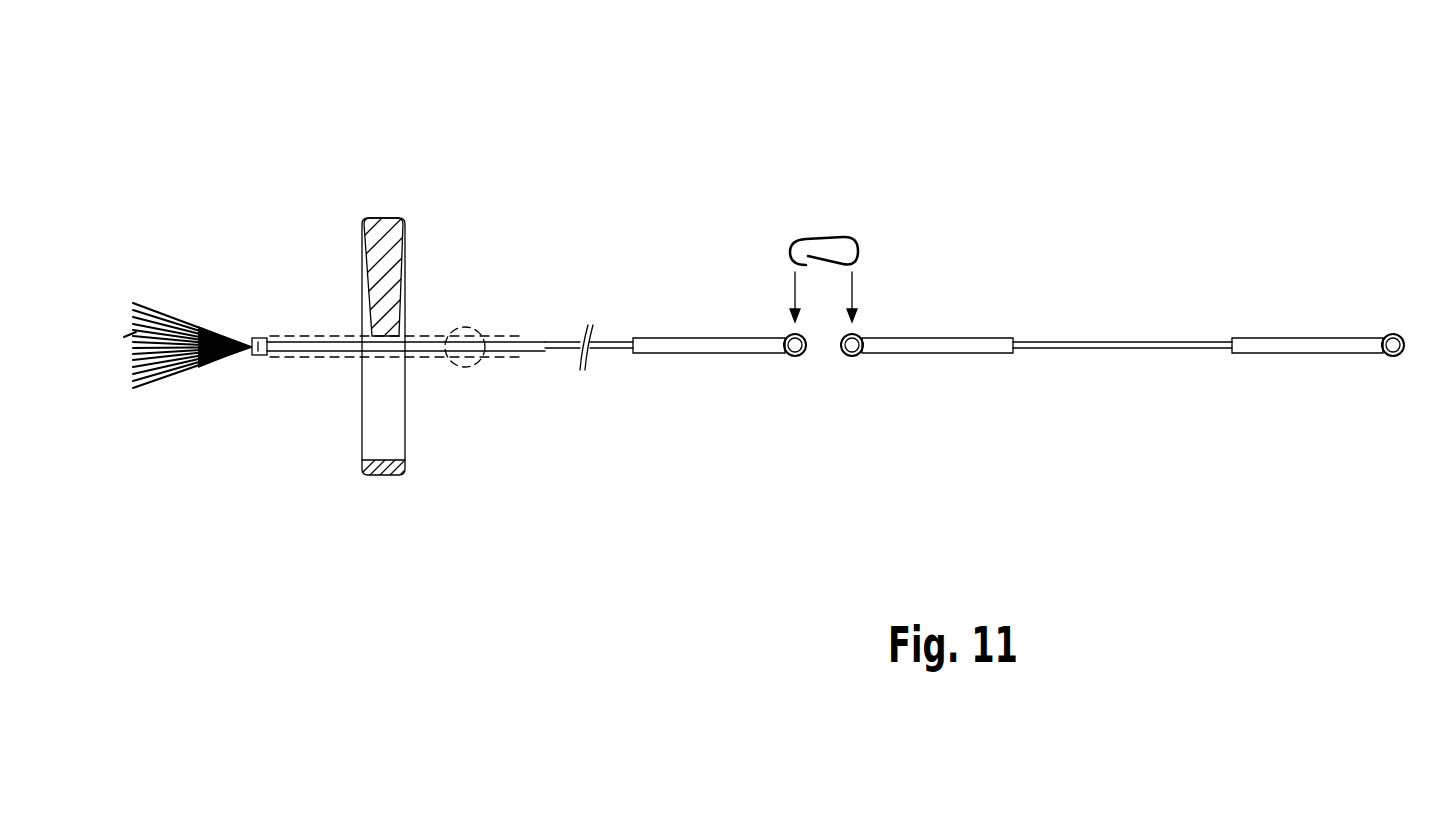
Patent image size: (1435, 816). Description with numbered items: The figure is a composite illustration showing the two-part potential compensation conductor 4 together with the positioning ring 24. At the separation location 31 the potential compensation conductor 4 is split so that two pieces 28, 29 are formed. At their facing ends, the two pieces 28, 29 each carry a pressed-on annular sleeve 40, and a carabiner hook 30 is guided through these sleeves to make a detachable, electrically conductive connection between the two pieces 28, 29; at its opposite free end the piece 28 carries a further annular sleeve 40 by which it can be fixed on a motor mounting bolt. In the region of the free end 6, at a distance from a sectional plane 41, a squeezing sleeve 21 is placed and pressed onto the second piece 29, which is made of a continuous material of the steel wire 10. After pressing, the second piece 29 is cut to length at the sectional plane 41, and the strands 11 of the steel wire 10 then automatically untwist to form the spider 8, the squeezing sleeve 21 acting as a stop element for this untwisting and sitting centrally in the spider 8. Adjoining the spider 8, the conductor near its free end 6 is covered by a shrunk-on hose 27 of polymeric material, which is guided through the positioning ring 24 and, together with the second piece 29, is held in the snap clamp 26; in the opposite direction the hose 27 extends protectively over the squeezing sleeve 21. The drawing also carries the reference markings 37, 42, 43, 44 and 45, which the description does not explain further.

The potential compensation conductor 4 is at (1155, 255).
The free end 6 is at (261, 322).
The spider 8 is at (130, 398).
The steel wire 10 is at (1065, 338).
The strands 11 is at (162, 305).
The squeezing sleeve 21 is at (256, 356).
The positioning ring 24 is at (398, 232).
The snap clamp 26 is at (375, 360).
The shrunk-on hose 27 is at (310, 336).
The piece 28 is at (1143, 378).
The second piece 29 is at (554, 326).
The carabiner hook 30 is at (826, 238).
The separation location 31 is at (820, 380).
The coupling region 37 is at (933, 212).
The annular sleeve 40 is at (711, 350).
The sectional plane 41 is at (136, 332).
The shaft section 42 is at (424, 360).
The shaft section 43 is at (505, 360).
The bearing region 44 is at (469, 325).
The bearing 45 is at (475, 378).